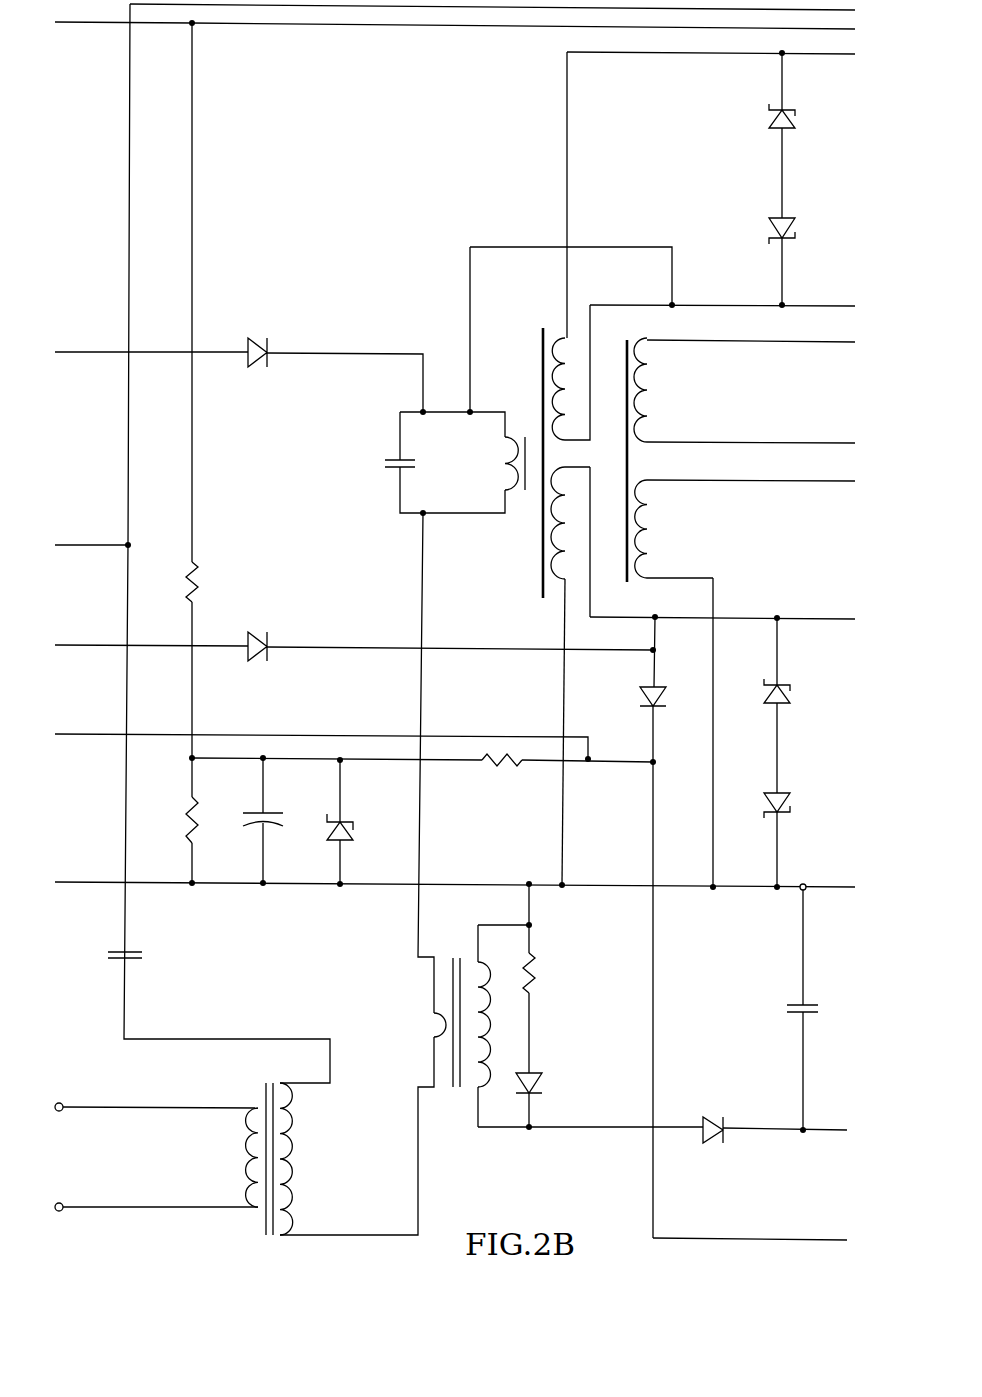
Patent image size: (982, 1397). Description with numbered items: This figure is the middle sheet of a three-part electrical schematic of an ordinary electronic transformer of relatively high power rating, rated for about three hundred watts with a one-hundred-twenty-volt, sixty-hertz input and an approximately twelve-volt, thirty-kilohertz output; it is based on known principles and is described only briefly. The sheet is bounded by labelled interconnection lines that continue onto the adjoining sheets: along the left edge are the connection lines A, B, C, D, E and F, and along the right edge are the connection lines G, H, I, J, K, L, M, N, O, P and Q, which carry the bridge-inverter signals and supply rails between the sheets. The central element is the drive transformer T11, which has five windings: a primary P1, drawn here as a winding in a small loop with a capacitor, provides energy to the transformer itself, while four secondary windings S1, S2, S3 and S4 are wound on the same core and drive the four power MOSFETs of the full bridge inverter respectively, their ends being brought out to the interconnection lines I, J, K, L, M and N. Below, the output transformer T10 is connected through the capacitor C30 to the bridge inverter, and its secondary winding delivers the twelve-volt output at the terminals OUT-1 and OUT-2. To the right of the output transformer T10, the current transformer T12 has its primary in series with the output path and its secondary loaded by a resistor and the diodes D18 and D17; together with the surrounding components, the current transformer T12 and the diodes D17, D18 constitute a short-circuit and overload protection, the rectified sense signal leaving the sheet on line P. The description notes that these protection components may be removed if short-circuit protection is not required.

The secondary winding S1 is at (652, 380).
The secondary winding S2 is at (558, 355).
The secondary winding S3 is at (553, 546).
The secondary winding S4 is at (652, 540).
The primary winding P1 is at (500, 448).
The drive transformer T11 is at (663, 503).
The output transformer T10 is at (305, 1143).
The current transformer T12 is at (451, 1104).
The capacitor C30 is at (141, 942).
The diode D17 is at (725, 1117).
The diode D18 is at (549, 1071).
The output terminal OUT-1 is at (156, 1197).
The output terminal OUT-2 is at (156, 1097).
The connection node A is at (114, 23).
The connection node B is at (229, 375).
The connection node C is at (82, 546).
The connection node D is at (344, 646).
The connection node E is at (312, 741).
The connection node F is at (445, 883).
The connection node G is at (504, 11).
The connection node H is at (534, 31).
The connection node I is at (718, 56).
The connection node J is at (729, 306).
The connection node K is at (761, 343).
The connection node L is at (760, 444).
The connection node M is at (762, 482).
The connection node N is at (733, 620).
The connection node O is at (838, 888).
The connection node P is at (673, 1131).
The connection node Q is at (762, 1241).